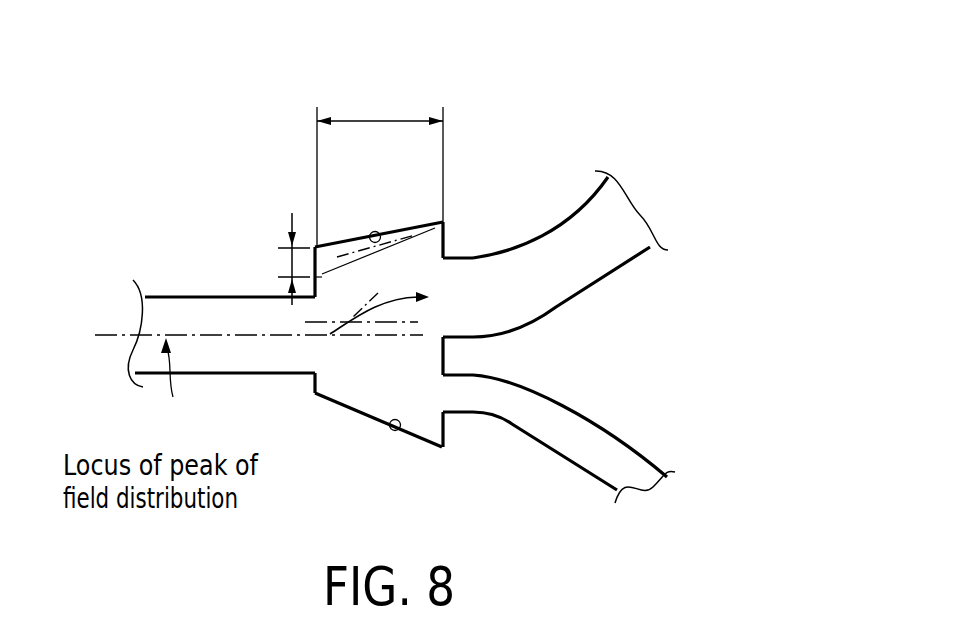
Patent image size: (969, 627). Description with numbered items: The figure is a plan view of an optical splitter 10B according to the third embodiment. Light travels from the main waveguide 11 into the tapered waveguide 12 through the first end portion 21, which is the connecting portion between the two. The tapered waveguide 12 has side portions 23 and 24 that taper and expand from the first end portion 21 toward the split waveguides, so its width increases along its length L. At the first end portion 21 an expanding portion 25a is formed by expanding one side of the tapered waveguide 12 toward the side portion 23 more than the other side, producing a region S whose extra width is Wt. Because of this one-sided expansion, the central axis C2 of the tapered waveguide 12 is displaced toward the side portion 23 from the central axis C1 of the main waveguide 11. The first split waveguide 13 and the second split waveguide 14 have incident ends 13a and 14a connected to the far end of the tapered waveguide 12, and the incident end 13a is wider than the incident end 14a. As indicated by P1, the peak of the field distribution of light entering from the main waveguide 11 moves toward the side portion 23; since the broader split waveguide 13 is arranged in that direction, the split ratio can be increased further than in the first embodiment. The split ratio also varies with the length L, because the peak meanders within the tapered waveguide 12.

The optical splitter 10B is at (542, 122).
The main waveguide 11 is at (165, 307).
The tapered waveguide 12 is at (418, 247).
The first split waveguide 13 is at (617, 213).
The incident end of first split waveguide 13a is at (458, 282).
The second split waveguide 14 is at (640, 483).
The incident end of second split waveguide 14a is at (443, 393).
The first end portion 21 is at (313, 373).
The side portion 23 is at (376, 232).
The side portion 24 is at (396, 432).
The expanding portion 25a is at (311, 250).
The region S is at (329, 252).
The peak of the field distribution P1 is at (380, 293).
The central axis of main waveguide C1 is at (380, 340).
The central axis of tapered waveguide C2 is at (430, 313).
The length of the tapered waveguide L is at (380, 164).
The expansion width Wt is at (287, 260).